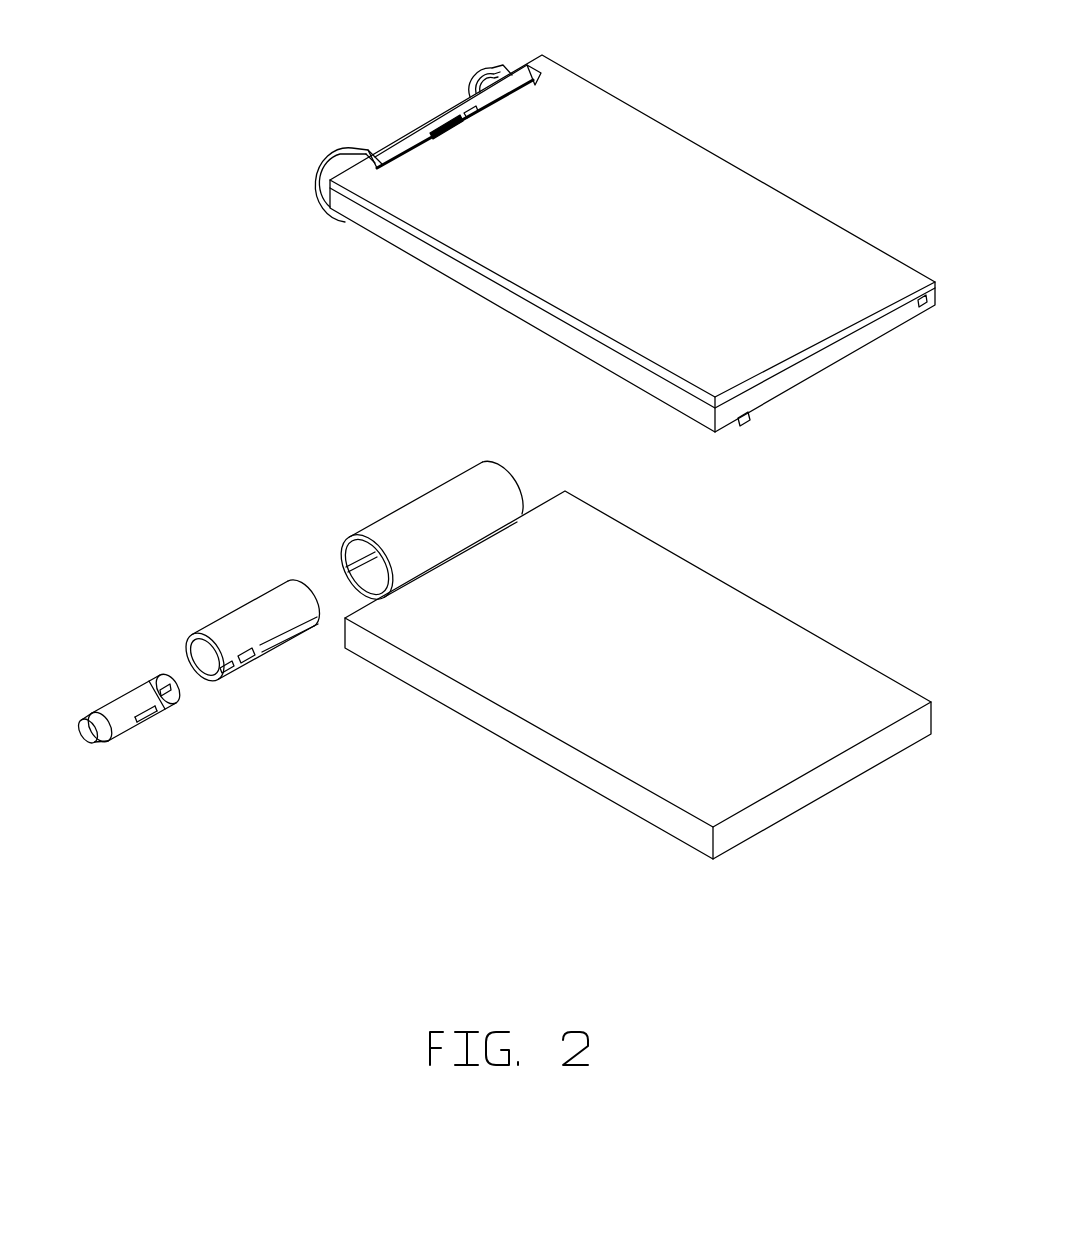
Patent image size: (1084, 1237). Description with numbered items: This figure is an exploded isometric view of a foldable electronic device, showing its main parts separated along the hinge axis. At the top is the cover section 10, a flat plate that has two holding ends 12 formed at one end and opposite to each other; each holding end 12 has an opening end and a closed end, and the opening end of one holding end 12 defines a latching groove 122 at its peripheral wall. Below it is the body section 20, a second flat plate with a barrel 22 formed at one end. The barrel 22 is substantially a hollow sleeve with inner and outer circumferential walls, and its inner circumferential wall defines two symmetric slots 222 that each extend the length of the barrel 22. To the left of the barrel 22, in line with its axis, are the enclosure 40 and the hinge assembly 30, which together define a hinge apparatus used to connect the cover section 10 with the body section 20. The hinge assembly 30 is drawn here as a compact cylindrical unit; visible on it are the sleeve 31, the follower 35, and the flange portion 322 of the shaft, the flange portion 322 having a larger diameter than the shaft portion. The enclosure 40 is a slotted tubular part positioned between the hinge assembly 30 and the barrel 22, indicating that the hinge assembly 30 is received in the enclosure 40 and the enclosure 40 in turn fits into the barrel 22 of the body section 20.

The cover section 10 is at (617, 107).
The holding end 12 is at (513, 62).
The latching groove 122 is at (498, 78).
The body section 20 is at (733, 620).
The barrel 22 is at (432, 502).
The slot 222 is at (345, 562).
The hinge assembly 30 is at (140, 722).
The sleeve 31 is at (110, 705).
The follower 35 is at (146, 700).
The flange portion 322 is at (88, 737).
The enclosure 40 is at (252, 620).